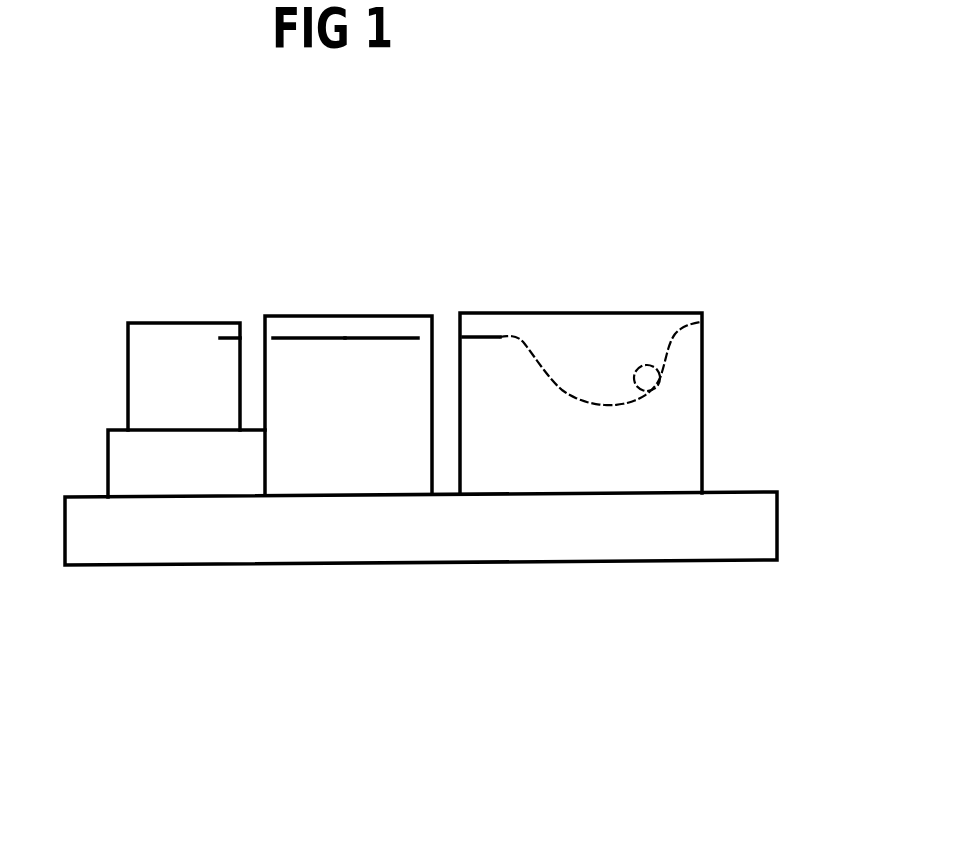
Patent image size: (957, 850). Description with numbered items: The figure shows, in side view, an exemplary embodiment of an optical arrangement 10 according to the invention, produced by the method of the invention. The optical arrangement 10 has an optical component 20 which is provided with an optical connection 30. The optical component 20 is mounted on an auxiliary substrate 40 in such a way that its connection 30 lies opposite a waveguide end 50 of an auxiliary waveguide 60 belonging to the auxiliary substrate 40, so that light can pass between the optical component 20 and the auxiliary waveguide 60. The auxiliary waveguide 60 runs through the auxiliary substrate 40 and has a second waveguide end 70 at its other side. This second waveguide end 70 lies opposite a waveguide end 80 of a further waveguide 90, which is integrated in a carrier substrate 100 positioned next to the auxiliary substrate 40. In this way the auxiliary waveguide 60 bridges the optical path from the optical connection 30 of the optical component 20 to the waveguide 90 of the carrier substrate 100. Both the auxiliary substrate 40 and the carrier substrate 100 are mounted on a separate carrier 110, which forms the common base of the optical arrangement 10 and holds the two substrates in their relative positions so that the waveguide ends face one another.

The optical arrangement 10 is at (723, 388).
The optical component 20 is at (170, 323).
The optical connection 30 is at (227, 330).
The auxiliary substrate 40 is at (333, 465).
The waveguide end 50 is at (282, 335).
The auxiliary waveguide 60 is at (347, 340).
The second waveguide end 70 is at (413, 333).
The waveguide end 80 is at (475, 328).
The waveguide 90 is at (530, 347).
The carrier substrate 100 is at (603, 338).
The carrier 110 is at (195, 532).